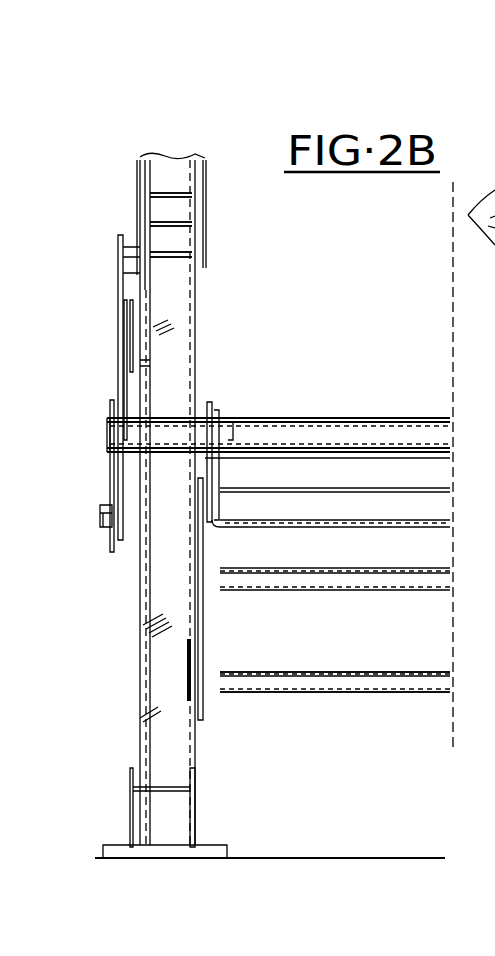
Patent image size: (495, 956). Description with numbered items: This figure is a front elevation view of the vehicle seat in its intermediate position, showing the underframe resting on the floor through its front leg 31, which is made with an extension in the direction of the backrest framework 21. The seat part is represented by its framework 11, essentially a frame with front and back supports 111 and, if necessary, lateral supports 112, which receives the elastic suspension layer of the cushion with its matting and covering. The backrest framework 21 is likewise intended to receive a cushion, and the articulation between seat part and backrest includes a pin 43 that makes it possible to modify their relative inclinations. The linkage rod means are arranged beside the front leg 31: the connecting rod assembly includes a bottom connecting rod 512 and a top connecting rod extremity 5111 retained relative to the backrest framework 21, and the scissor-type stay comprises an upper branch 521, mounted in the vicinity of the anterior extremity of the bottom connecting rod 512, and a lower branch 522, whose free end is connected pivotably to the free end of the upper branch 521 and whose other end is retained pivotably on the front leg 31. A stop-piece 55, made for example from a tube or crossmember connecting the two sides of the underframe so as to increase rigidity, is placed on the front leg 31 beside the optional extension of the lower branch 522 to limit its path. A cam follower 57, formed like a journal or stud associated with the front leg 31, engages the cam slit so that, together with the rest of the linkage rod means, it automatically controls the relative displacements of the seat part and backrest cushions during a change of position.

The framework 11 is at (336, 534).
The front and back supports 111 is at (360, 440).
The lateral supports 112 is at (225, 458).
The backrest framework 21 is at (160, 195).
The pin 43 is at (172, 248).
The cam follower 57 is at (150, 368).
The side bracket 5111 is at (118, 292).
The bottom connecting rod 512 is at (110, 486).
The upper branch 521 is at (210, 403).
The lower branch 522 is at (200, 635).
The stop-piece 55 is at (318, 688).
The front leg 31 is at (168, 742).